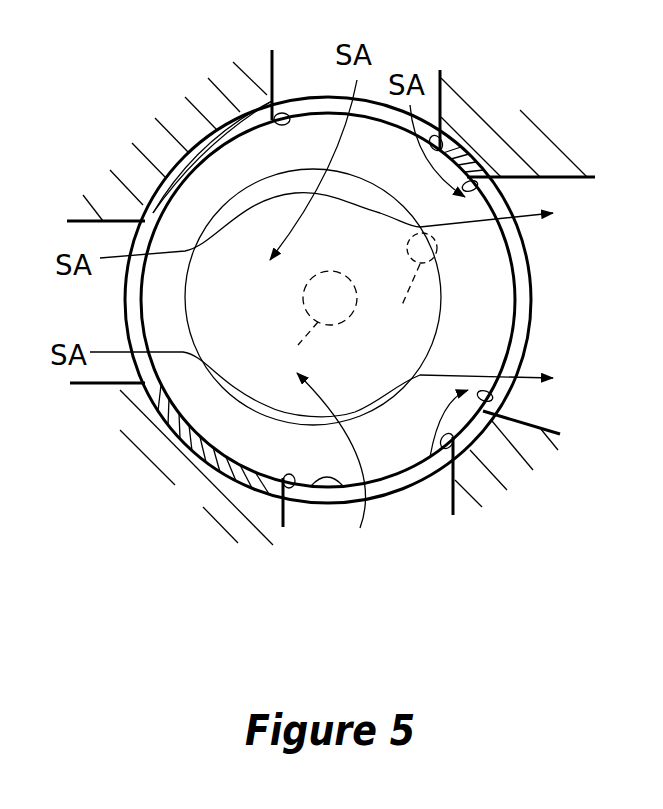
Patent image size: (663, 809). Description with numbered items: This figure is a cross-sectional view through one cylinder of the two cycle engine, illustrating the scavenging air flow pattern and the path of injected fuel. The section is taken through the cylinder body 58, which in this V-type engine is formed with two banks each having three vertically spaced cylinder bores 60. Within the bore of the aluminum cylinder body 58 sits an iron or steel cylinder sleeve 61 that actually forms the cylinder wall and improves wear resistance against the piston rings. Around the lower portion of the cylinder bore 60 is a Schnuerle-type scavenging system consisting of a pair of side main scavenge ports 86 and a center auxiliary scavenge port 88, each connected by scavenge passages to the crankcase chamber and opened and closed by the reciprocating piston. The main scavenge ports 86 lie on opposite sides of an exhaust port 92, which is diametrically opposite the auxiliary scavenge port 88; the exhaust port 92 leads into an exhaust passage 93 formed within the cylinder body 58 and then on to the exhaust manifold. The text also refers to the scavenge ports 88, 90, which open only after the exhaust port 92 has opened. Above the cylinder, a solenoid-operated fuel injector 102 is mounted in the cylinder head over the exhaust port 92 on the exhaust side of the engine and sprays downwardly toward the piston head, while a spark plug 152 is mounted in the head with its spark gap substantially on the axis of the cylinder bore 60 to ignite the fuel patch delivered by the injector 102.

The cylinder body 58 is at (147, 458).
The cylinder bore 60 is at (205, 438).
The cylinder sleeve 61 is at (290, 110).
The main scavenge port 86 is at (319, 106).
The auxiliary scavenge port 88 is at (148, 222).
The scavenge port 90 is at (132, 297).
The exhaust port 92 is at (522, 270).
The exhaust passage 93 is at (602, 319).
The fuel injector 102 is at (406, 289).
The spark plug 152 is at (297, 323).